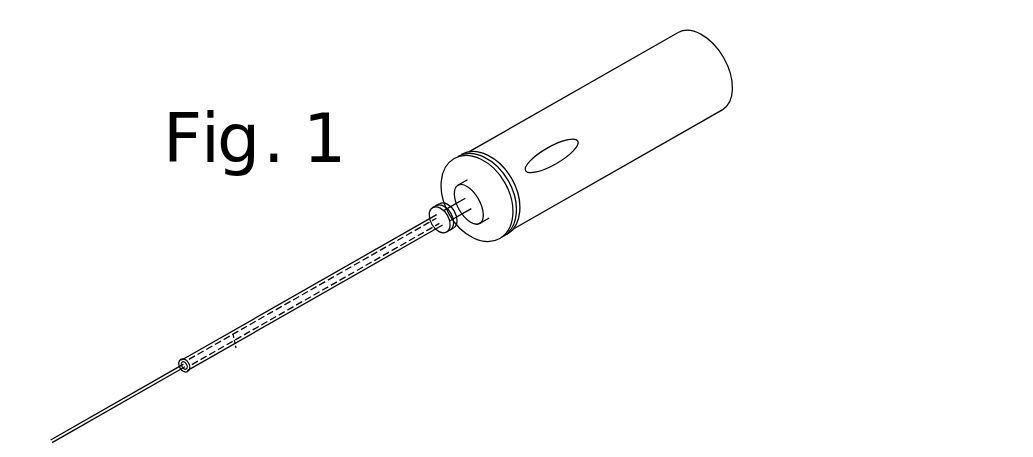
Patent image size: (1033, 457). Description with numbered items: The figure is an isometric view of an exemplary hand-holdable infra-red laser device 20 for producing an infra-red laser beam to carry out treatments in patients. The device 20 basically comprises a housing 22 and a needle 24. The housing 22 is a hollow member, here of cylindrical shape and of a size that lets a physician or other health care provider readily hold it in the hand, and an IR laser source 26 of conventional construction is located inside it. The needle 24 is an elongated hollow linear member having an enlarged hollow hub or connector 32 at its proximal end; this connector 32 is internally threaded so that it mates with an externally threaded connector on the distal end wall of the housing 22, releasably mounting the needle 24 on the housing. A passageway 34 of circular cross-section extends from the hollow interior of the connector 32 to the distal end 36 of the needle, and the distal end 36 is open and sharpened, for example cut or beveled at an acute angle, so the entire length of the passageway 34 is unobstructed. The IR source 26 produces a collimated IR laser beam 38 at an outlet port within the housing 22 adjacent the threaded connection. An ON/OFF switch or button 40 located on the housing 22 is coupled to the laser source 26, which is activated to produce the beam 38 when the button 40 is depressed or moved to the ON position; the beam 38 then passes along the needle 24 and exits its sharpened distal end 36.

The device 20 is at (391, 228).
The housing 22 is at (543, 195).
The needle 24 is at (263, 332).
The IR laser source 26 is at (714, 456).
The hub or connector 32 is at (456, 218).
The passageway 34 is at (195, 367).
The distal end 36 is at (186, 357).
The IR laser beam 38 is at (108, 412).
The ON/OFF switch or button 40 is at (558, 153).